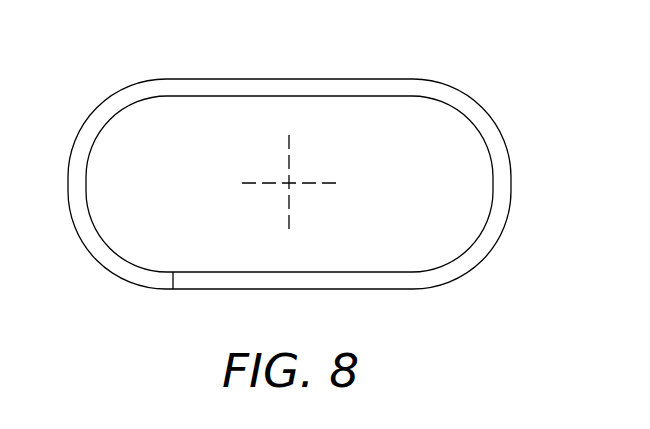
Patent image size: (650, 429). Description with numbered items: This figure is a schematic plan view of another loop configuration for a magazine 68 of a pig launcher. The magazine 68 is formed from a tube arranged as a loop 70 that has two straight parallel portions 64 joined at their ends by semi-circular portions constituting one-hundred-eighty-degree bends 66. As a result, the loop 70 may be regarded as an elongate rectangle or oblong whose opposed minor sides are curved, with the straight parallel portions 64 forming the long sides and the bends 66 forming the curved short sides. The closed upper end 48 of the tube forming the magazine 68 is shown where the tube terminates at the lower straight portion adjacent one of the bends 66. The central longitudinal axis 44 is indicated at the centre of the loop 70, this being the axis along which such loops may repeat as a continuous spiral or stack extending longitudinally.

The magazine 68 is at (275, 175).
The straight parallel portions 64 is at (288, 85).
The loop 70 is at (467, 103).
The 180° bends 66 is at (95, 242).
The closed upper end 48 is at (177, 285).
The central longitudinal axis 44 is at (289, 183).